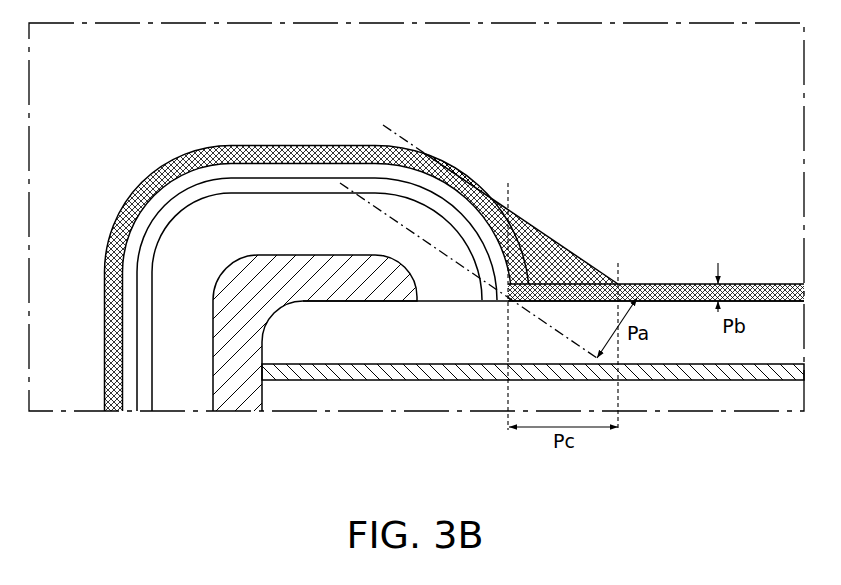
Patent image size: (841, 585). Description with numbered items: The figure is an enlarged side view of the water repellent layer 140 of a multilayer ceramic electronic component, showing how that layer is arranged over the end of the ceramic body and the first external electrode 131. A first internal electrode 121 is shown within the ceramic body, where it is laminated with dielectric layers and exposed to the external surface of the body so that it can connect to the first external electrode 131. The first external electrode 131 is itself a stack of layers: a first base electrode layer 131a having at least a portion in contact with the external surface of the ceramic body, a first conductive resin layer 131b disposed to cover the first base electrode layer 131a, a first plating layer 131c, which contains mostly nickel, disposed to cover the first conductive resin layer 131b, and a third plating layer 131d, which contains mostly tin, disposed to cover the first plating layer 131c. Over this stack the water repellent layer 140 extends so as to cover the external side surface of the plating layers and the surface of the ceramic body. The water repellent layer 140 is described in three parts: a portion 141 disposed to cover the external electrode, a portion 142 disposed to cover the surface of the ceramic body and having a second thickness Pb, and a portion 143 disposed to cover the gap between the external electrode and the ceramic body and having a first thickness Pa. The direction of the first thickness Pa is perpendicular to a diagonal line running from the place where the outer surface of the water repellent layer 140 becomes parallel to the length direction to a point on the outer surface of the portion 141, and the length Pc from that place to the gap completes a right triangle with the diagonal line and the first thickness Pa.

The first internal electrode 121 is at (394, 368).
The first external electrode 131 is at (280, 325).
The first base electrode layer 131a is at (315, 358).
The first conductive resin layer 131b is at (188, 399).
The first plating layer 131c is at (145, 399).
The third plating layer 131d is at (128, 399).
The water repellent layer 140 is at (589, 199).
The portion covering external electrodes 141 is at (451, 173).
The portion covering ceramic body surface 142 is at (645, 284).
The portion covering gap 143 is at (525, 230).